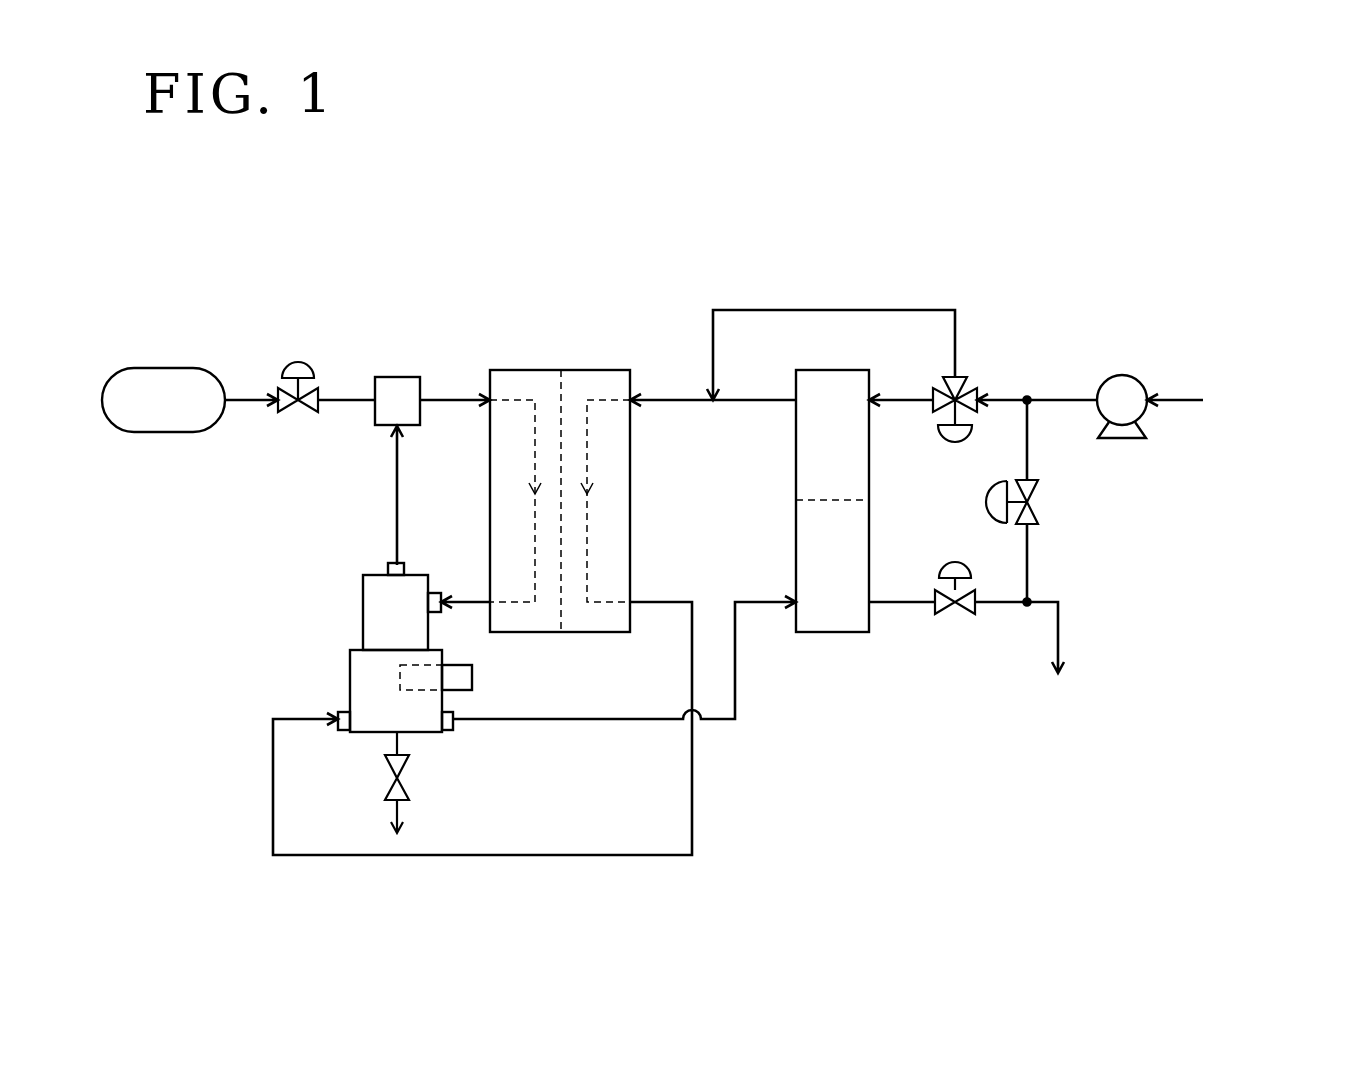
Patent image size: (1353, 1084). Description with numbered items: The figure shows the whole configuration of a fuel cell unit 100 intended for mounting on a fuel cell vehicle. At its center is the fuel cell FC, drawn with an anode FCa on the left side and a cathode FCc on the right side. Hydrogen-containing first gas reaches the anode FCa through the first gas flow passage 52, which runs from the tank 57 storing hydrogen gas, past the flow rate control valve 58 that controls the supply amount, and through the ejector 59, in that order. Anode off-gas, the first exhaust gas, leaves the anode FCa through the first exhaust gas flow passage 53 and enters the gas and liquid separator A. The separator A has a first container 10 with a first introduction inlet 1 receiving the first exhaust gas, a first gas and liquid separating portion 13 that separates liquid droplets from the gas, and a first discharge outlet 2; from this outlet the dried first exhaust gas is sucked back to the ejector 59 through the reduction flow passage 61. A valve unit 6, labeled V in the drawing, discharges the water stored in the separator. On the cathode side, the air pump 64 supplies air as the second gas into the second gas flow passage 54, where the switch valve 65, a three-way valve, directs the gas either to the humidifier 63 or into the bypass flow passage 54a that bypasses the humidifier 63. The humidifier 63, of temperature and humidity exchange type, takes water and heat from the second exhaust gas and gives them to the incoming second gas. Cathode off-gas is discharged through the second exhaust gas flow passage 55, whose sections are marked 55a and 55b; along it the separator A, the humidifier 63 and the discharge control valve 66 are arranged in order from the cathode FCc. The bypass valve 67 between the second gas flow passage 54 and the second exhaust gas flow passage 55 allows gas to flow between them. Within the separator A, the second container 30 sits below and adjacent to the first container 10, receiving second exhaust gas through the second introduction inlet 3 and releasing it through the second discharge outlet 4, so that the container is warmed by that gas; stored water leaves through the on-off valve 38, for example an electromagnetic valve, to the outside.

The fuel cell unit 100 is at (641, 211).
The fuel cell FC is at (589, 359).
The anode FCa is at (510, 373).
The cathode FCc is at (612, 382).
The first gas flow passage 52 is at (345, 398).
The tank 57 is at (157, 365).
The flow rate control valve 58 is at (290, 413).
The ejector 59 is at (400, 377).
The reduction flow passage 61 is at (396, 490).
The first exhaust gas flow passage 53 is at (470, 605).
The second gas flow passage 54 is at (678, 405).
The bypass flow passage 54a is at (838, 308).
The humidifier 63 is at (793, 462).
The air pump 64 is at (1122, 373).
The switch valve 65 is at (960, 380).
The discharge control valve 66 is at (948, 612).
The bypass valve 67 is at (1040, 506).
The second exhaust gas flow passage 55 is at (900, 605).
The first exhaust pipe 55a is at (520, 858).
The second exhaust pipe 55b is at (555, 722).
The gas and liquid separator A is at (283, 630).
The first container 10 is at (365, 625).
The first gas and liquid separating portion 13 is at (354, 589).
The first discharge outlet 2 is at (388, 570).
The first introduction inlet 1 is at (432, 590).
The second container 30 is at (360, 675).
The valve 6 is at (472, 680).
The second introduction inlet 3 is at (345, 738).
The second discharge outlet 4 is at (455, 738).
The on-off valve 38 is at (410, 785).